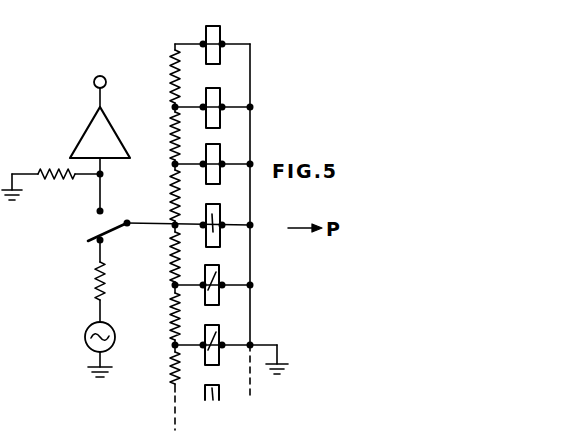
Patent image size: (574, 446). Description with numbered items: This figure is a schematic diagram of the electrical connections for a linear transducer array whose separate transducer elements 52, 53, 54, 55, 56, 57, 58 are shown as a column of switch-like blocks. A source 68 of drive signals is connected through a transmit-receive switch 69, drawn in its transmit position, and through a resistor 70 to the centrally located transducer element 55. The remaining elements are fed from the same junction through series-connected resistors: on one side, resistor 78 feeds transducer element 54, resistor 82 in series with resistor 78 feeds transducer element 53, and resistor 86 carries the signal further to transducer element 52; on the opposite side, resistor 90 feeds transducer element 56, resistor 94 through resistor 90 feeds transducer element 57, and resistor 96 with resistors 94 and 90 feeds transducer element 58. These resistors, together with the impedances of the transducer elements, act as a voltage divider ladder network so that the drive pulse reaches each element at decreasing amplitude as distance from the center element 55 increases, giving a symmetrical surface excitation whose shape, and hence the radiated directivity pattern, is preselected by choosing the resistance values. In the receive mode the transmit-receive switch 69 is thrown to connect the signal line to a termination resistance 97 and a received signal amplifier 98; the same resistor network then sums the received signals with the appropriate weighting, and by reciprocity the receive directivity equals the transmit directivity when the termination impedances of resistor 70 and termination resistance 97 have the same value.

The transducer element 52 is at (219, 392).
The transducer element 53 is at (216, 332).
The transducer element 54 is at (216, 272).
The transducer element 55 is at (212, 214).
The transducer element 56 is at (221, 176).
The transducer element 57 is at (221, 118).
The transducer element 58 is at (221, 56).
The source of drive signals 68 is at (84, 338).
The transmit-receive switch 69 is at (82, 231).
The resistor 70 is at (96, 290).
The resistor 78 is at (172, 241).
The resistor 82 is at (172, 303).
The resistor 86 is at (170, 380).
The resistor 90 is at (172, 185).
The resistor 94 is at (173, 136).
The resistor 96 is at (173, 62).
The termination resistance 97 is at (44, 180).
The received signal amplifier 98 is at (82, 140).